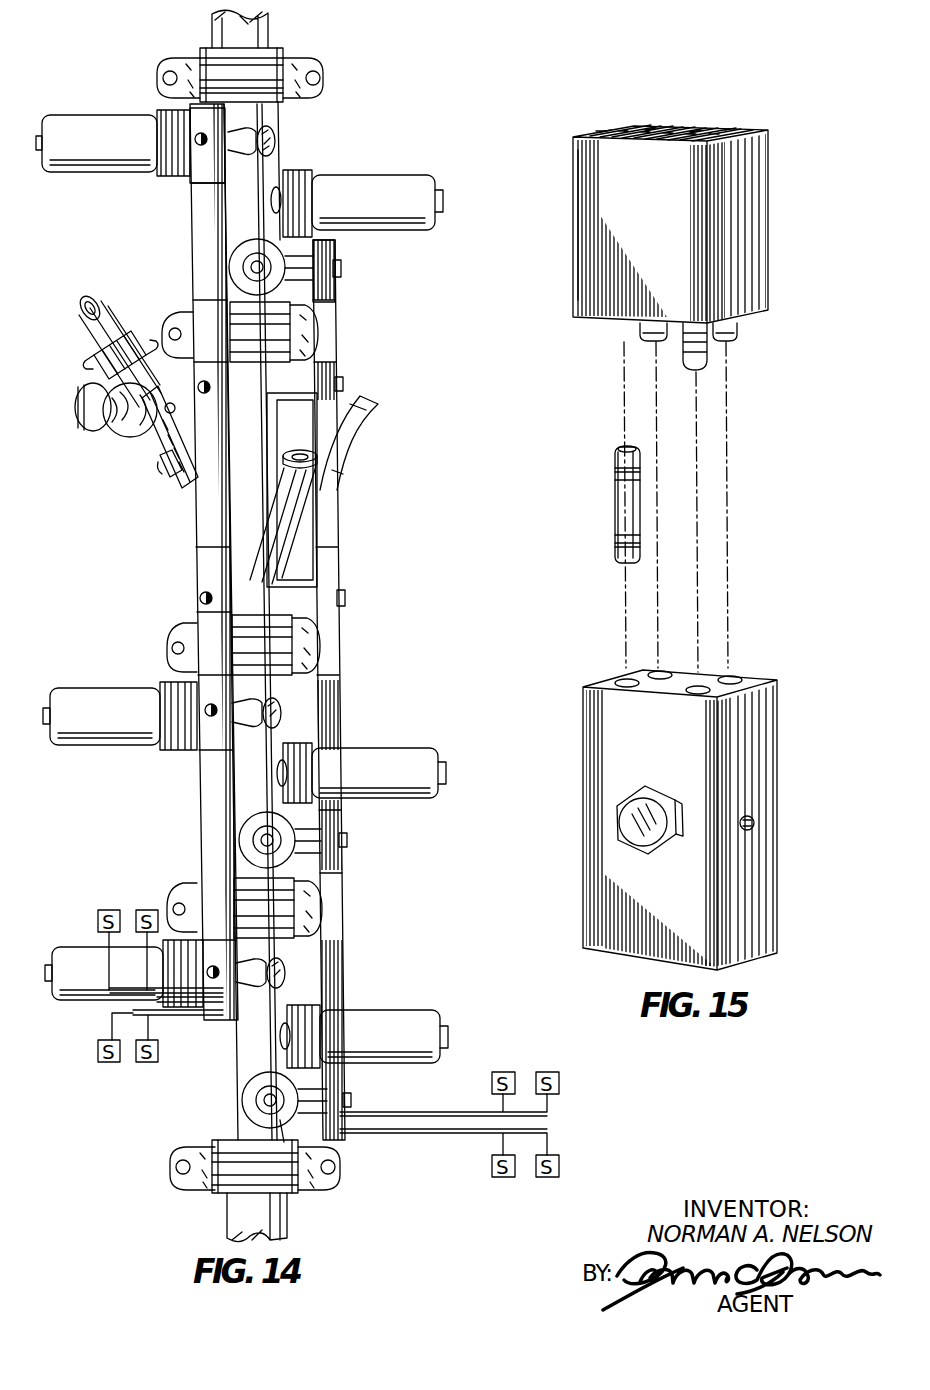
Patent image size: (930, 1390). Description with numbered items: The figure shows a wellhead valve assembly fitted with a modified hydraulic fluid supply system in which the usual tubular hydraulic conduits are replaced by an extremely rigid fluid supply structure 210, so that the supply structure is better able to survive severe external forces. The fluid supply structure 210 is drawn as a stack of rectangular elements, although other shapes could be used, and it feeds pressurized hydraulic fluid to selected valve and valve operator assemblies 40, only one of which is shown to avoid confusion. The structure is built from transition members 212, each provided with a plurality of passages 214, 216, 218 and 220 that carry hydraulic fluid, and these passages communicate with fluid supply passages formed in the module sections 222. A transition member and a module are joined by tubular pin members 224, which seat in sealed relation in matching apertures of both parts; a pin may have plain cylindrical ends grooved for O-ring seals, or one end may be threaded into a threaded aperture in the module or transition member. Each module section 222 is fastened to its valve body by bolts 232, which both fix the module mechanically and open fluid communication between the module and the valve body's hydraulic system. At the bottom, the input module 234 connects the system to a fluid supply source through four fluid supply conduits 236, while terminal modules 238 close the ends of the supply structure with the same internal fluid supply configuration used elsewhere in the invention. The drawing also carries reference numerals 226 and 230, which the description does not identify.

In FIG. 14, the valve and valve operator assembly 40 is at (123, 413).
In FIG. 14, the fluid supply structure 210 is at (323, 577).
In FIG. 15, the fluid supply structure 210 is at (775, 232).
In FIG. 15, the transition member 212 is at (608, 270).
In FIG. 15, the passage 214 is at (650, 125).
In FIG. 15, the passage 216 is at (690, 145).
In FIG. 15, the passage 218 is at (600, 123).
In FIG. 15, the passage 220 is at (730, 132).
In FIG. 14, the module section 222 is at (210, 737).
In FIG. 15, the module section 222 is at (605, 712).
In FIG. 15, the tubular pin member 224 is at (622, 493).
In FIG. 15, the grooves in pin 226 is at (617, 548).
In FIG. 14, the conduit tube 230 is at (210, 500).
In FIG. 15, the bolt 232 is at (633, 818).
In FIG. 14, the input module 234 is at (220, 1017).
In FIG. 14, the fluid supply conduit 236 is at (197, 1027).
In FIG. 14, the terminal module 238 is at (203, 163).